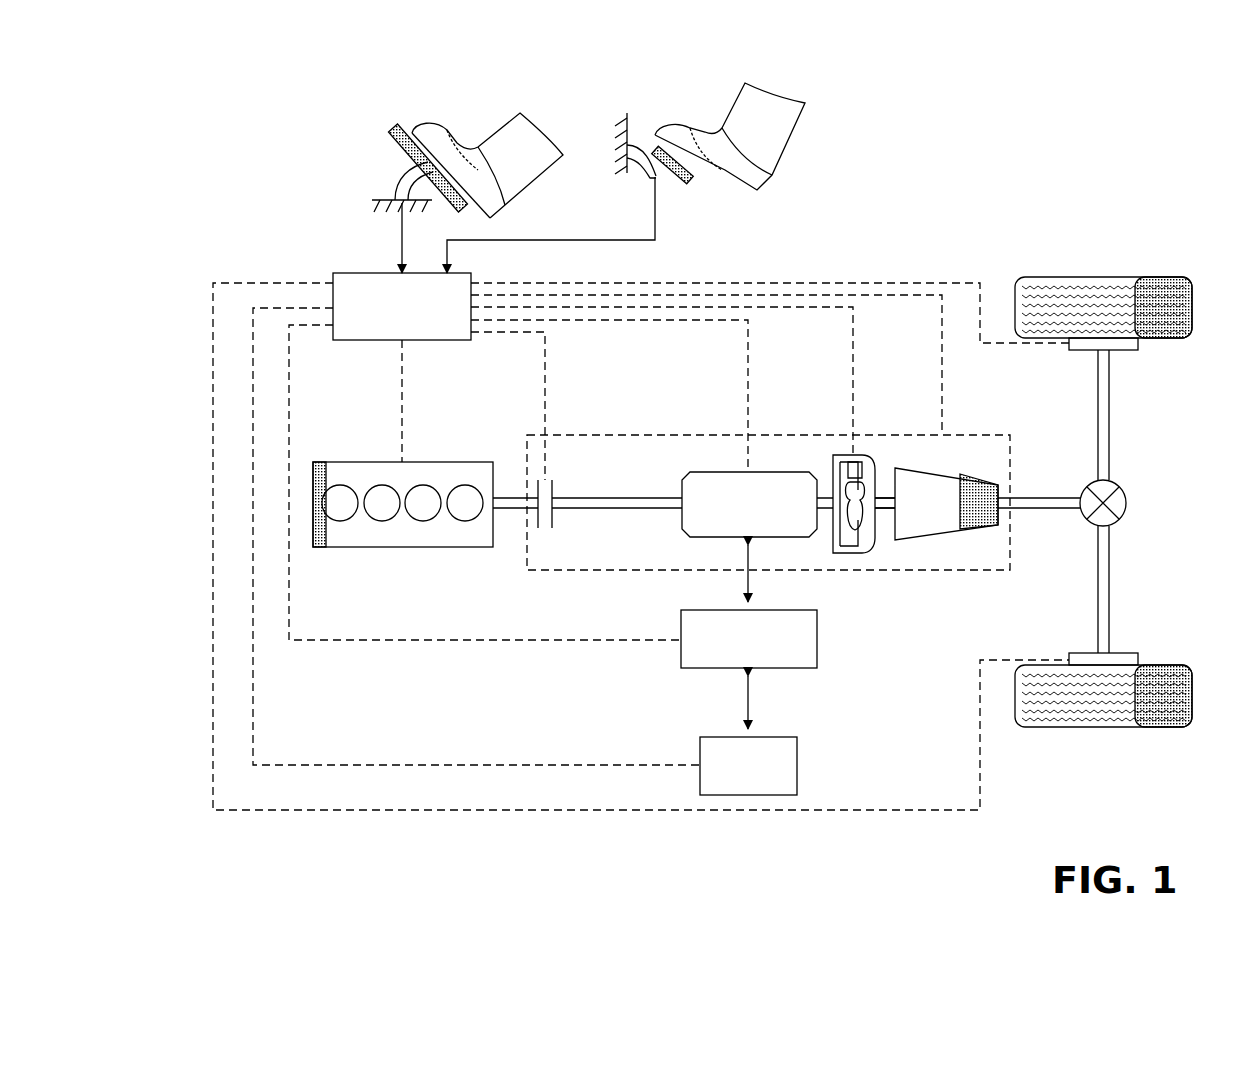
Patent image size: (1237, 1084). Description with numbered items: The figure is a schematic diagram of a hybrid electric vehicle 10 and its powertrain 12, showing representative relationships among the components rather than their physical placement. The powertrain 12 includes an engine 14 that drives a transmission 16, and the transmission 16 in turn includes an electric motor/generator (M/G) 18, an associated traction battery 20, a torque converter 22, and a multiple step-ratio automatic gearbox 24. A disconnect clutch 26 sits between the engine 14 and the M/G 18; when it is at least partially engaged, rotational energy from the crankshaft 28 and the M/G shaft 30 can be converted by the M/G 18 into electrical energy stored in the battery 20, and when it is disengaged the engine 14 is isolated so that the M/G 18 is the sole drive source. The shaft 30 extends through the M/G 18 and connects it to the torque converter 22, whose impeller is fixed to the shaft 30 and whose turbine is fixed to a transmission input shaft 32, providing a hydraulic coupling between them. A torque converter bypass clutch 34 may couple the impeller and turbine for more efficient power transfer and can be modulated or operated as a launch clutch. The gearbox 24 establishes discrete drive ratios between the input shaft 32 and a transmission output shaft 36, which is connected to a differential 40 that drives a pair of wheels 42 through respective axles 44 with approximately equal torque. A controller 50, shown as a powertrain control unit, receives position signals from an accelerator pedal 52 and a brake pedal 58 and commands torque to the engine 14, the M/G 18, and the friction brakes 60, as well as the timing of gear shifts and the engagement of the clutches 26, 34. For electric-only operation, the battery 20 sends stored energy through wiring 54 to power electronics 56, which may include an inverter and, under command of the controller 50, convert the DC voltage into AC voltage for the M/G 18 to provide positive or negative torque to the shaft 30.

The hybrid electric vehicle 10 is at (886, 200).
The powertrain 12 is at (535, 663).
The engine 14 is at (364, 462).
The transmission 16 is at (820, 435).
The electric motor/generator (M/G) 18 is at (720, 472).
The traction battery 20 is at (797, 762).
The torque converter 22 is at (850, 553).
The gearbox 24 is at (945, 540).
The disconnect clutch 26 is at (555, 490).
The crankshaft 28 is at (520, 497).
The M/G shaft 30 is at (628, 497).
The transmission input shaft 32 is at (883, 497).
The torque converter bypass clutch 34 is at (857, 458).
The transmission output shaft 36 is at (1050, 497).
The differential 40 is at (1127, 505).
The wheels 42 is at (1105, 277).
The axles 44 is at (1112, 410).
The controller 50 is at (373, 273).
The accelerator pedal 52 is at (412, 162).
The wiring 54 is at (750, 708).
The power electronics 56 is at (817, 637).
The brake pedal 58 is at (693, 183).
The friction brakes 60 is at (1140, 343).